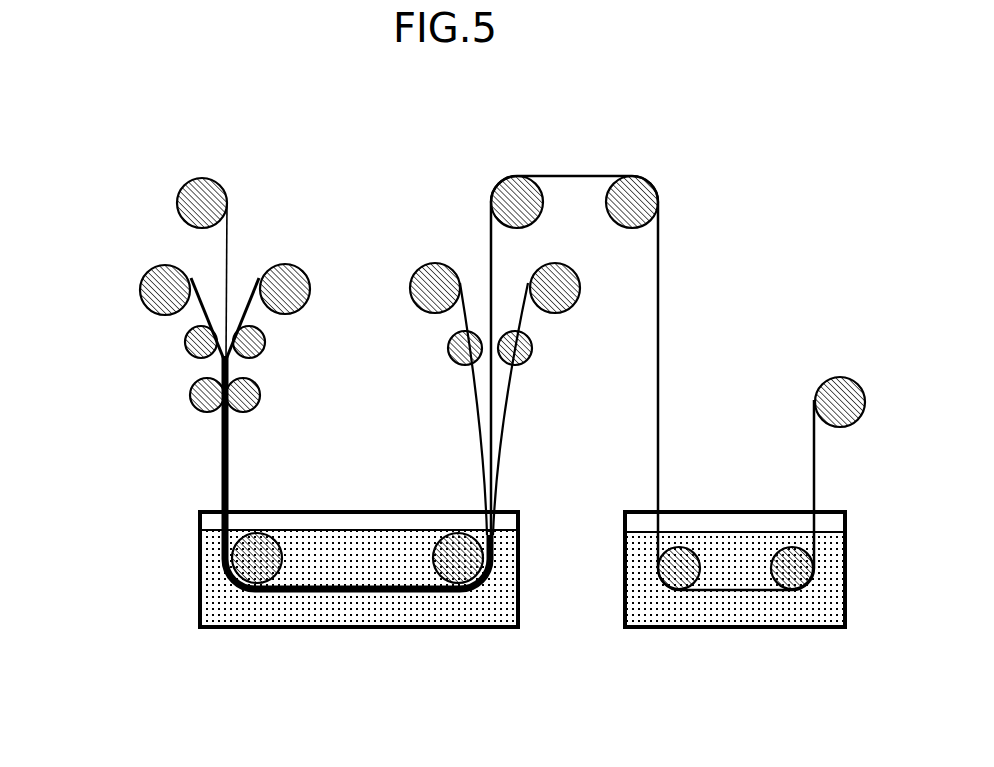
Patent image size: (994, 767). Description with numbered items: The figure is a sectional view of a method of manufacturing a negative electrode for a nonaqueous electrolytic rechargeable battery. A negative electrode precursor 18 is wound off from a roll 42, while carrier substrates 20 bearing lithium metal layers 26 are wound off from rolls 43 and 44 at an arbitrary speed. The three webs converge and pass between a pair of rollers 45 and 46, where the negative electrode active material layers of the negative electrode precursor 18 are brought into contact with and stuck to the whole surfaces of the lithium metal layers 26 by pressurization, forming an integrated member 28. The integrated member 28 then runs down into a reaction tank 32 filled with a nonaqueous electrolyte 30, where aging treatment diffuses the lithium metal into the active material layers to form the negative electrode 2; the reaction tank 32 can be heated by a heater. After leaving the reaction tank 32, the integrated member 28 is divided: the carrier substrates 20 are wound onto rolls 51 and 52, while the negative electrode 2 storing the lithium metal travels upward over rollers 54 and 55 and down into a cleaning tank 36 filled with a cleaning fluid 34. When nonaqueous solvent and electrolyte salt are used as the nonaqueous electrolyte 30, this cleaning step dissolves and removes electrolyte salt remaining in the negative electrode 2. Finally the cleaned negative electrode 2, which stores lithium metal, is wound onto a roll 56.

The negative electrode 2 is at (488, 255).
The negative electrode precursor 18 is at (228, 248).
The carrier substrate 20 is at (467, 310).
The lithium metal layer 26 is at (198, 308).
The integrated member 28 is at (220, 473).
The nonaqueous electrolyte 30 is at (218, 600).
The reaction tank 32 is at (520, 553).
The cleaning fluid 34 is at (827, 583).
The cleaning tank 36 is at (845, 520).
The roll 42 is at (210, 197).
The roll 43 is at (148, 280).
The roll 44 is at (290, 283).
The roller 45 is at (193, 394).
The roller 46 is at (255, 395).
The roll 51 is at (422, 277).
The roll 52 is at (562, 288).
The roller 54 is at (502, 193).
The roller 55 is at (642, 195).
The roll 56 is at (843, 393).